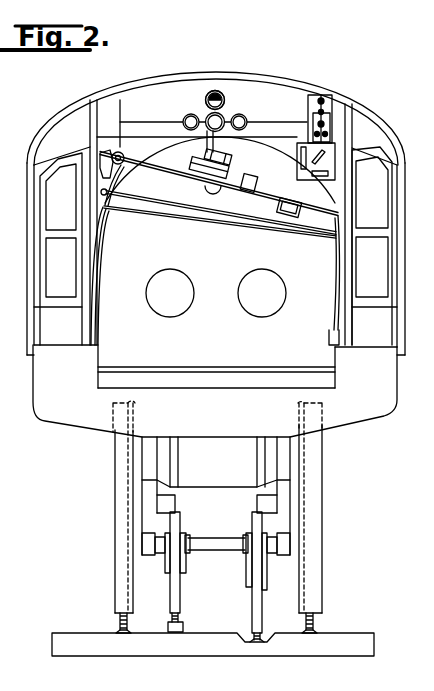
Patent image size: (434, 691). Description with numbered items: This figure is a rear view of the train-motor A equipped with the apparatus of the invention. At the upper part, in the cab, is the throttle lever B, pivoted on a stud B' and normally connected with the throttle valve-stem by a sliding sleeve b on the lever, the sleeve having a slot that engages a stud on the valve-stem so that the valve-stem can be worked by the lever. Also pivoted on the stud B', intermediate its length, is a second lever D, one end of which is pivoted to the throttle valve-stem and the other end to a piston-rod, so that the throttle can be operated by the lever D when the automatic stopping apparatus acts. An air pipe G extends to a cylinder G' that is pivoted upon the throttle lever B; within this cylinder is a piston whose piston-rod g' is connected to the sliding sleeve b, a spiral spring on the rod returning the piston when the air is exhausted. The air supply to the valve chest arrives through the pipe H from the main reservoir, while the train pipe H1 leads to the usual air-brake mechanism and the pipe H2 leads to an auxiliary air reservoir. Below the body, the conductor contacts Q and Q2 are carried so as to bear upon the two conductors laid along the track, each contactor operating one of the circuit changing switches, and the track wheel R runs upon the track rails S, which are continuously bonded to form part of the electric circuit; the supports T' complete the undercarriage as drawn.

The train-motor A is at (216, 328).
The throttle lever B is at (219, 184).
The stud B' is at (202, 172).
The lever D is at (136, 178).
The air pipe G is at (187, 114).
The cylinder G' is at (220, 155).
The piston-rod g' is at (254, 175).
The sliding sleeve b is at (251, 189).
The pipe H is at (298, 151).
The train pipe H1 is at (170, 221).
The pipe H2 is at (96, 231).
The conductor contact Q is at (184, 598).
The conductor contact Q2 is at (252, 610).
The track wheel R is at (113, 496).
The track rails S is at (119, 628).
The foot support T' is at (228, 621).